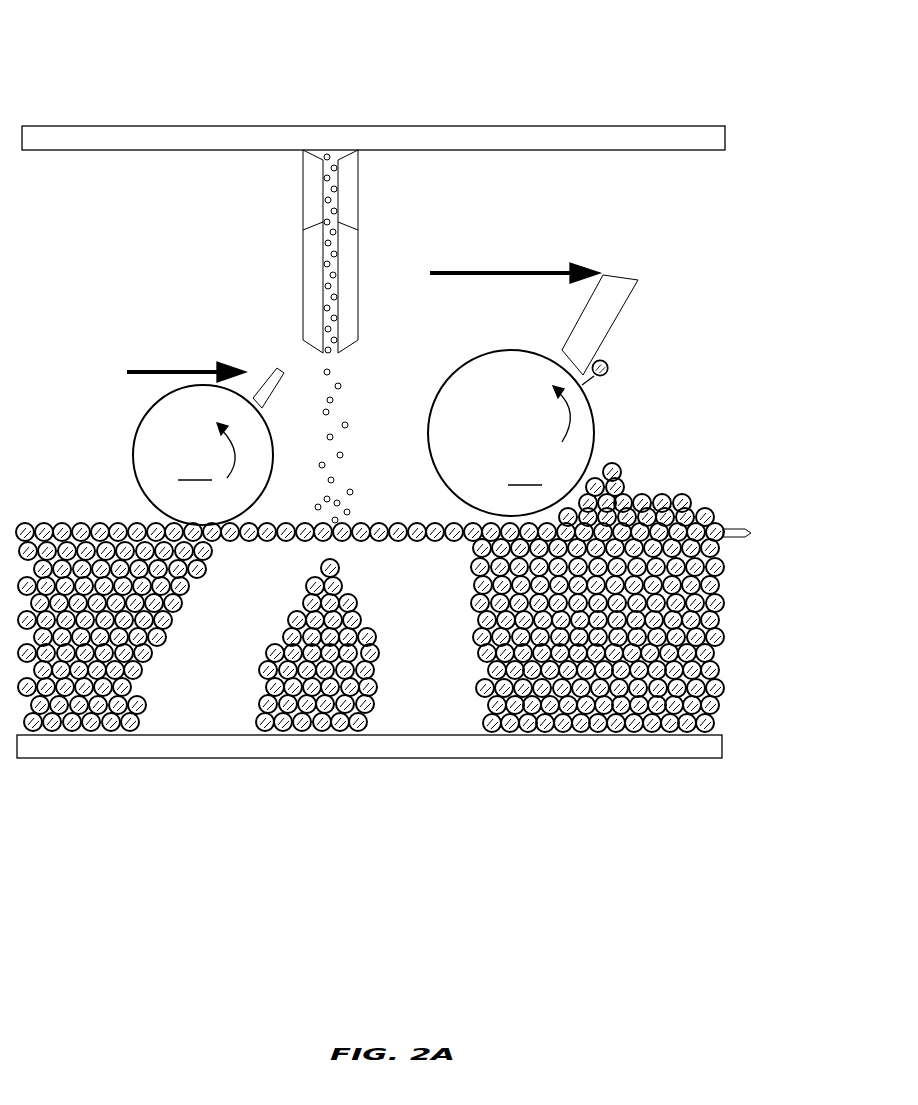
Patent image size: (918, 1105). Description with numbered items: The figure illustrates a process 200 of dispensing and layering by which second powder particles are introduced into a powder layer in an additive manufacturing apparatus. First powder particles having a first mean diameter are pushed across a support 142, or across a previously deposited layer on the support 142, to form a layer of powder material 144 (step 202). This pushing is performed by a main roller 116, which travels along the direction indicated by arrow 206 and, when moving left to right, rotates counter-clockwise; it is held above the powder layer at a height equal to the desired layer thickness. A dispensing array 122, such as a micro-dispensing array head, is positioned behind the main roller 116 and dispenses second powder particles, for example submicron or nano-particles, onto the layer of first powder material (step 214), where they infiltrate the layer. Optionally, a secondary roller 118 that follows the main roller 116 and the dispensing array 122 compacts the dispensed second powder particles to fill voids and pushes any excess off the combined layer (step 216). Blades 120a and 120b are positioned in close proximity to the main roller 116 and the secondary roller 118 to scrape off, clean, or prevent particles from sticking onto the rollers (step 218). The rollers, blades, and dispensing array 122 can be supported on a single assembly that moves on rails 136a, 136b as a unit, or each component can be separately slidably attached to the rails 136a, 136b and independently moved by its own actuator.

The process 200 is at (96, 41).
The rail 136a is at (373, 176).
The rail 136b is at (215, 141).
The dispensing array 122 is at (355, 238).
The dispensing step 214 is at (336, 404).
The arrow 206 is at (486, 283).
The blade 120a is at (282, 370).
The blade 120b is at (640, 280).
The secondary roller 118 is at (203, 455).
The main roller 116 is at (511, 433).
The particle-sticking prevention step 218 is at (607, 375).
The layer-forming step 202 is at (627, 472).
The compacting step 216 is at (148, 521).
The layer of powder material 144 is at (752, 533).
The support 142 is at (627, 761).